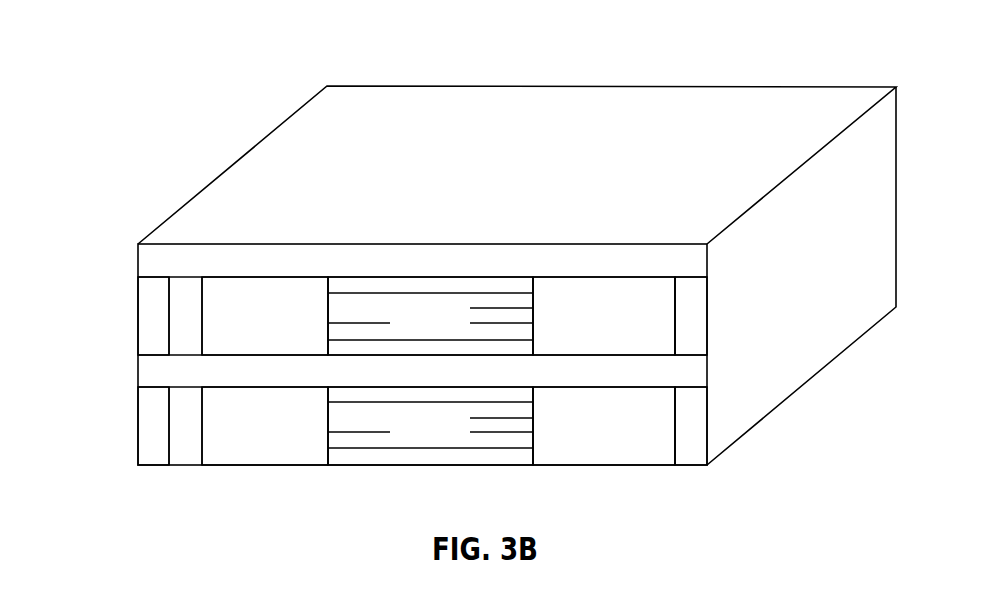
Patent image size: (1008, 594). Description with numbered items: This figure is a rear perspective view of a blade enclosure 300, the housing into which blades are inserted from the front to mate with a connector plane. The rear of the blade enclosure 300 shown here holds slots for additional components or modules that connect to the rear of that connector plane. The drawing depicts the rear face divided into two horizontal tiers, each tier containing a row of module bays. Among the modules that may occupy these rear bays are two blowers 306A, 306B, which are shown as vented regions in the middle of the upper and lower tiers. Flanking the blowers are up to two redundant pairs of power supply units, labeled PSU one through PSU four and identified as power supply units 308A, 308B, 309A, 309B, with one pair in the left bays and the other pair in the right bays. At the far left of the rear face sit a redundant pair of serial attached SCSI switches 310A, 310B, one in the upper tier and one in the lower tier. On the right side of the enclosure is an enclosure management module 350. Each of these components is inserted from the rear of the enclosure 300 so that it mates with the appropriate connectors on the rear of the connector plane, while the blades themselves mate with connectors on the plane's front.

The blade enclosure 300 is at (242, 79).
The blower 306A is at (328, 308).
The blower 306B is at (328, 418).
The power supply unit 308A is at (265, 319).
The power supply unit 308B is at (265, 430).
The power supply unit 309A is at (604, 319).
The power supply unit 309B is at (604, 429).
The serial attached SCSI (SAS) switch 310A is at (155, 308).
The serial attached SCSI (SAS) switch 310B is at (155, 418).
The enclosure management module 350 is at (692, 308).